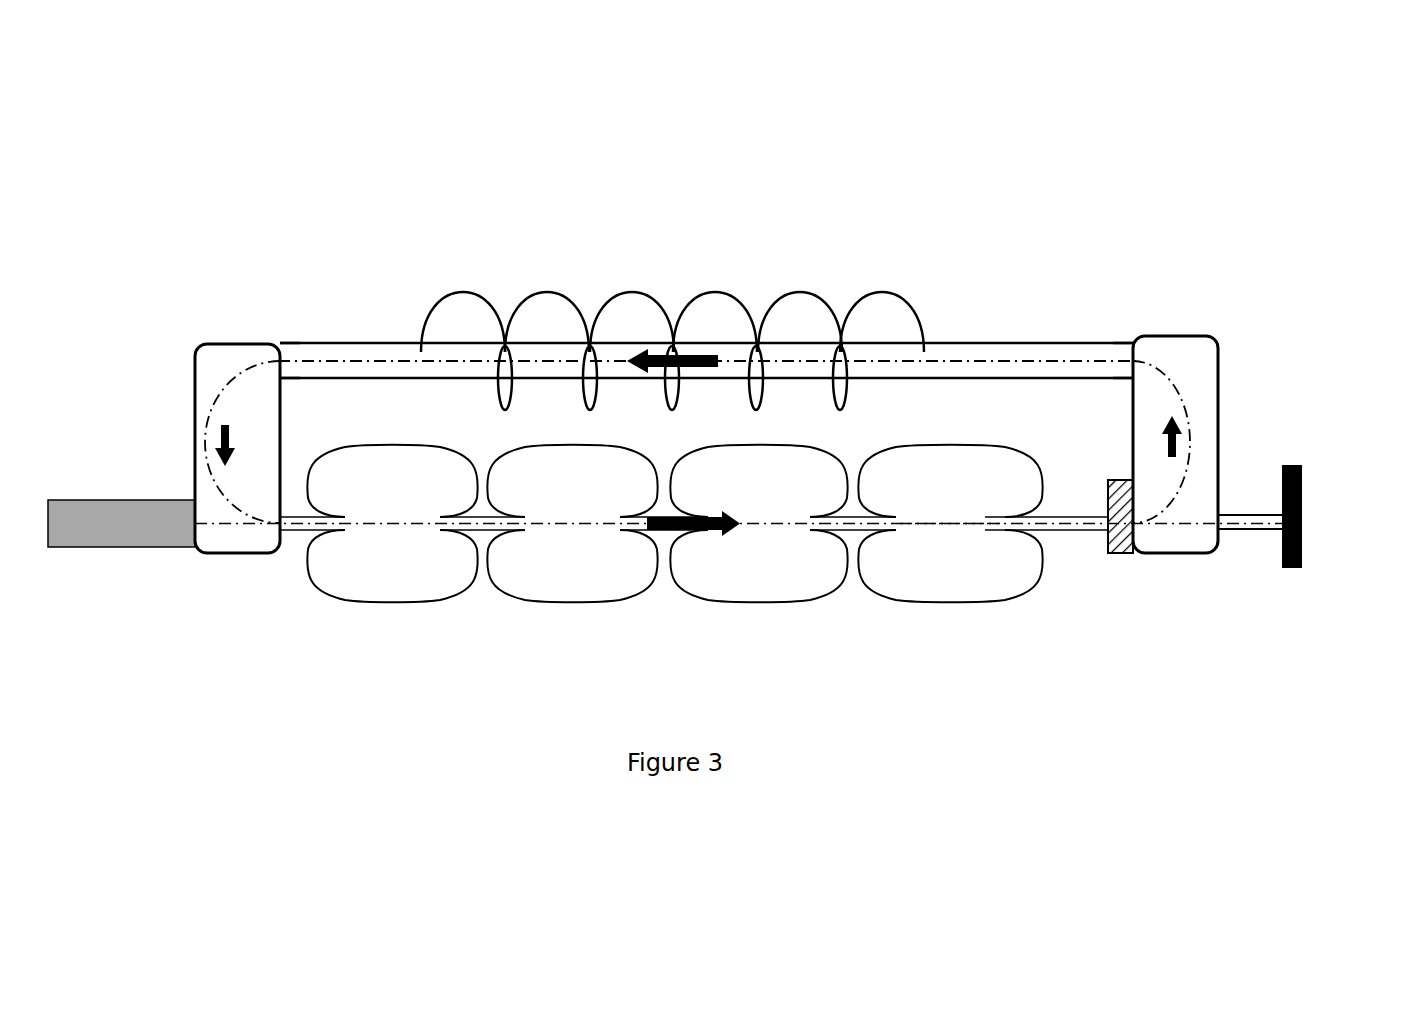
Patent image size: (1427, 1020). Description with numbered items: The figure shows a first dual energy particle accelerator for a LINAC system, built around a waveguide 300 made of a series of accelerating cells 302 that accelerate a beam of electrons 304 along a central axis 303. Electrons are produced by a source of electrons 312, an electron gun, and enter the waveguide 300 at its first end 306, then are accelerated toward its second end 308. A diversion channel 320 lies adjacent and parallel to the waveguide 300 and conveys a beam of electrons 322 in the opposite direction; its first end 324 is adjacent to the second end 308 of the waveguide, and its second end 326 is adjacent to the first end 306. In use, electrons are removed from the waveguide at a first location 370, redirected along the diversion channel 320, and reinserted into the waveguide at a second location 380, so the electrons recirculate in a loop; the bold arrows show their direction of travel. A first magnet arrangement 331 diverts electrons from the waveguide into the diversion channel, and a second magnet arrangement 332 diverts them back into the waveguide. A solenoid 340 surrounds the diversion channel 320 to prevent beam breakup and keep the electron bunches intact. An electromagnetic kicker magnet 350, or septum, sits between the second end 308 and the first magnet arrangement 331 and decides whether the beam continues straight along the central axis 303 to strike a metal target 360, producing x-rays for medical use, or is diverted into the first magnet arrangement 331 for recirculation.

The waveguide 300 is at (685, 442).
The accelerating cells 302 is at (840, 458).
The central axis 303 is at (770, 530).
The beam of electrons 304 is at (958, 525).
The first end 306 is at (300, 560).
The second end 308 is at (1028, 525).
The source of electrons 312 is at (125, 553).
The diversion channel 320 is at (730, 340).
The beam of electrons 322 is at (398, 356).
The first end 324 is at (1127, 335).
The second end 326 is at (284, 352).
The first magnet arrangement 331 is at (1223, 385).
The second magnet arrangement 332 is at (197, 392).
The solenoid 340 is at (545, 284).
The electromagnetic kicker magnet 350 is at (1133, 540).
The metal target 360 is at (1310, 517).
The first location 370 is at (1192, 452).
The second location 380 is at (238, 425).